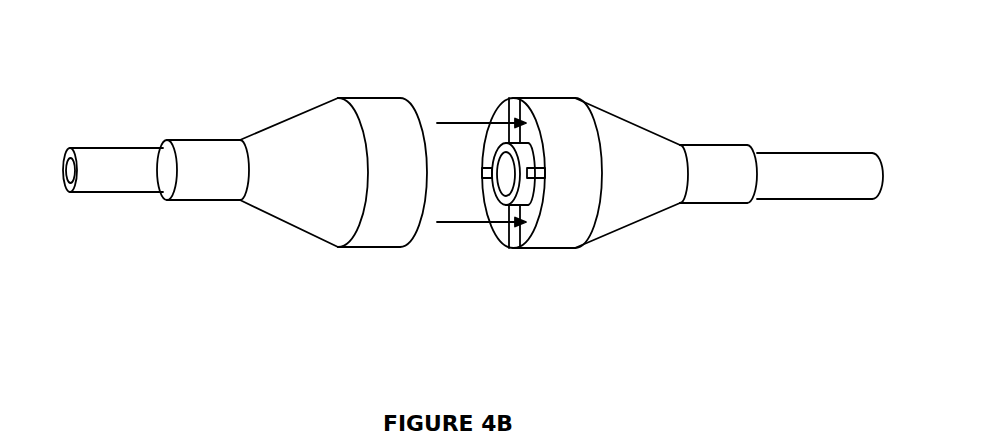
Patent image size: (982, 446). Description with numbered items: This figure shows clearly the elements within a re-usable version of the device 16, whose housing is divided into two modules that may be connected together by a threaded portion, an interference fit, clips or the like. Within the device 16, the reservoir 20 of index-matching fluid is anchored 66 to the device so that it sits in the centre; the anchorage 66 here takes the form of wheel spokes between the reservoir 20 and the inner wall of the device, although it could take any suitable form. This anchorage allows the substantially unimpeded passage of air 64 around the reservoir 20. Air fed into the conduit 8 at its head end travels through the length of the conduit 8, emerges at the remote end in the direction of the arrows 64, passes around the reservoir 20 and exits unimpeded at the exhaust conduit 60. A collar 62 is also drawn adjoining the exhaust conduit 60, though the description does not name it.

The conduit 8 is at (107, 193).
The device 16 is at (300, 115).
The reservoir 20 is at (502, 193).
The exhaust conduit 60 is at (828, 200).
The collar 62 is at (692, 208).
The passage of air 64 is at (453, 123).
The anchorage 66 is at (509, 118).